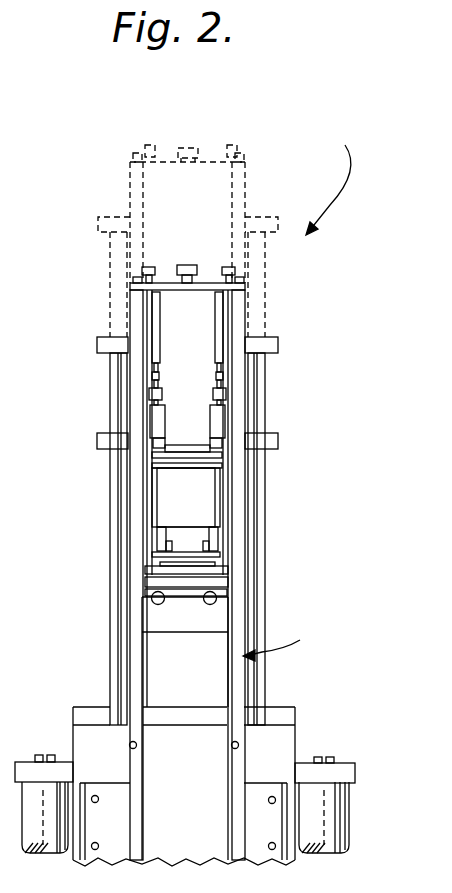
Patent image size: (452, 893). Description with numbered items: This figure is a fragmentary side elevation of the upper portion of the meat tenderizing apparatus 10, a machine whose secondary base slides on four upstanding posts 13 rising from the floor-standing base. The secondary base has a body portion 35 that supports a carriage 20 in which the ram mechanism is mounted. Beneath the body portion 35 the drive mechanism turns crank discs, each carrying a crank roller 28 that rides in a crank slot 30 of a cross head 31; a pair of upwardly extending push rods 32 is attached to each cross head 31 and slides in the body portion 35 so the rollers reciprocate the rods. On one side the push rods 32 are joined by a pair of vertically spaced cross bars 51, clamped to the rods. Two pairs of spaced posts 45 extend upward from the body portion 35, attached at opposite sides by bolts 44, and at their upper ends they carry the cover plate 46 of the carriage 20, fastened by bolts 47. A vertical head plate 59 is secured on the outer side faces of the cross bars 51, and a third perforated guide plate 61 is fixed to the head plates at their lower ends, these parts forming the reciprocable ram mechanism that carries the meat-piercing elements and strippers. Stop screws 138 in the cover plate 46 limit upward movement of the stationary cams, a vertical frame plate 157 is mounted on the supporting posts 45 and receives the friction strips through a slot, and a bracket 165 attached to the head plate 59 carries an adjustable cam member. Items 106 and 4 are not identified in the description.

The meat tenderizing apparatus 10 is at (328, 177).
The upstanding posts 13 is at (48, 850).
The carriage 20 is at (281, 641).
The crank roller 28 is at (183, 884).
The crank slot 30 is at (138, 883).
The cross head 31 is at (229, 881).
The push rods 32 is at (113, 505).
The body portion 35 is at (100, 742).
The bolts 44 is at (232, 747).
The posts 45 is at (133, 672).
The cover plate 46 is at (208, 160).
The bolts 47 is at (135, 157).
The cross bars 51 is at (99, 225).
The head plate 59 is at (187, 365).
The third perforated guide plate 61 is at (178, 462).
The bolt 106 is at (183, 147).
The stop screws 138 is at (152, 128).
The vertical frame plate 157 is at (167, 622).
The bracket 165 is at (218, 420).
The section line 4 is at (17, 693).